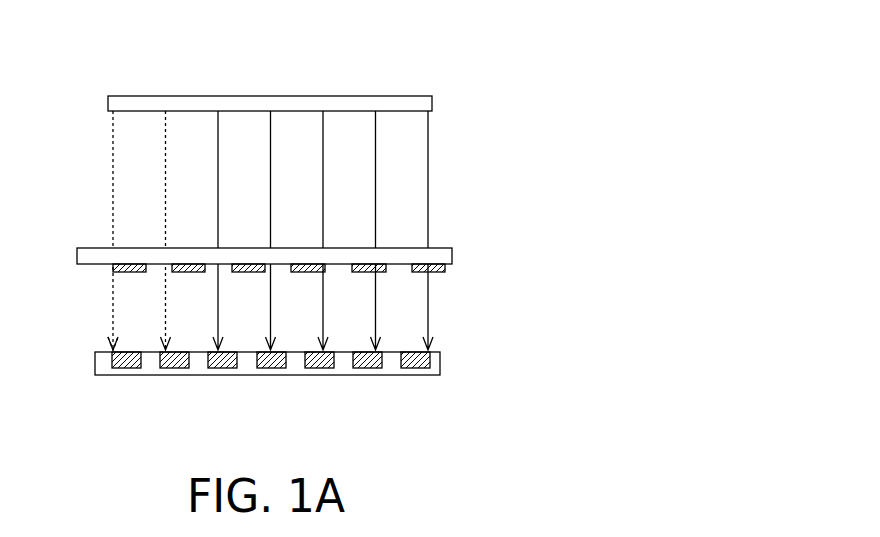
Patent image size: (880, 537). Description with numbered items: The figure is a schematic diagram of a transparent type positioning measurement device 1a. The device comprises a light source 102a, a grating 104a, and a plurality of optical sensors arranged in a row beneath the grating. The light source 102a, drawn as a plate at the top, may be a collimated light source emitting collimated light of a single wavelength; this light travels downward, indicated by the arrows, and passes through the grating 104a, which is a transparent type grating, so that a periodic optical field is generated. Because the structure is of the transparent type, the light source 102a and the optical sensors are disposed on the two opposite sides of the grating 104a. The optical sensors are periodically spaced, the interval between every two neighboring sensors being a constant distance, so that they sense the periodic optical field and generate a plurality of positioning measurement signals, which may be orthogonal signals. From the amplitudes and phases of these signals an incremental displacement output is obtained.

The transparent type positioning measurement device 1a is at (558, 56).
The light source 102a is at (434, 103).
The grating 104a is at (454, 255).